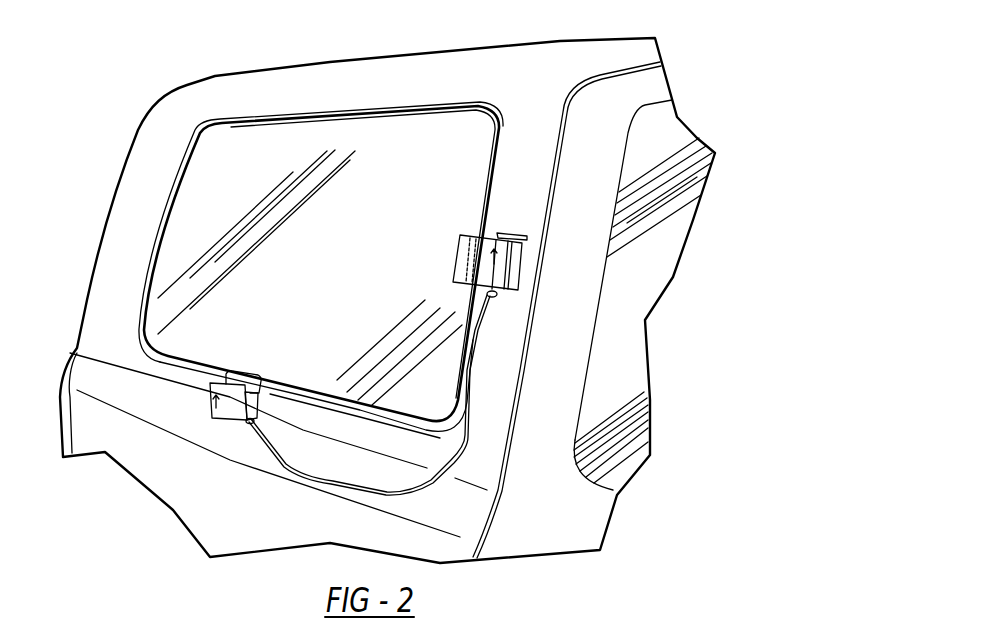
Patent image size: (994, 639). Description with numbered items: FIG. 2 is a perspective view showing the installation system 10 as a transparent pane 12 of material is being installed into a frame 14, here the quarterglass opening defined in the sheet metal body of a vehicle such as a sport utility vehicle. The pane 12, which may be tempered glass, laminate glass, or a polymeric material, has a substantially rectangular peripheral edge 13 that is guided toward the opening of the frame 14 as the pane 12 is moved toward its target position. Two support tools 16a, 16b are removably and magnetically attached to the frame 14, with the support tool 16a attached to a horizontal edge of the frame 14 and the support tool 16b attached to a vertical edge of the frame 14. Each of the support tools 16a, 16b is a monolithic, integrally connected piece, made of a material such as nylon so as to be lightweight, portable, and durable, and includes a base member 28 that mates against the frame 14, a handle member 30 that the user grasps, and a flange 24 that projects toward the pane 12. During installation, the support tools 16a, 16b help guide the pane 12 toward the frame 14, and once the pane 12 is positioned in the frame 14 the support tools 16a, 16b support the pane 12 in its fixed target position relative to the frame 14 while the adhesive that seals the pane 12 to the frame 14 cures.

The installation system 10 is at (86, 186).
The transparent pane 12 is at (228, 150).
The peripheral edge 13 is at (410, 117).
The frame 14 is at (443, 105).
The support tool 16a is at (248, 397).
The support tool 16b is at (523, 267).
The flange 24 is at (458, 245).
The base member 28 is at (253, 403).
The handle member 30 is at (213, 392).